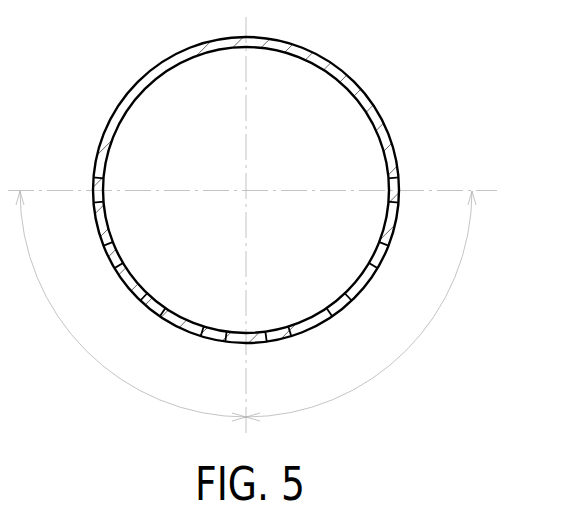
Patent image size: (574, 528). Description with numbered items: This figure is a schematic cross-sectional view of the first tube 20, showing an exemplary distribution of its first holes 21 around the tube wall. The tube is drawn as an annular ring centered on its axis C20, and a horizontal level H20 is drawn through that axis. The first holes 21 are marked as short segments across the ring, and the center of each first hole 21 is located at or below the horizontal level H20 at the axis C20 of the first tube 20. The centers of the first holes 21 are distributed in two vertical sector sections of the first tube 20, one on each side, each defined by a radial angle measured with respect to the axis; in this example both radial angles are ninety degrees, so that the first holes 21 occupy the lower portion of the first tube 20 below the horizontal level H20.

The first tube 20 is at (178, 50).
The first holes 21 is at (248, 263).
The axis C20 is at (270, 225).
The horizontal level H20 is at (275, 188).